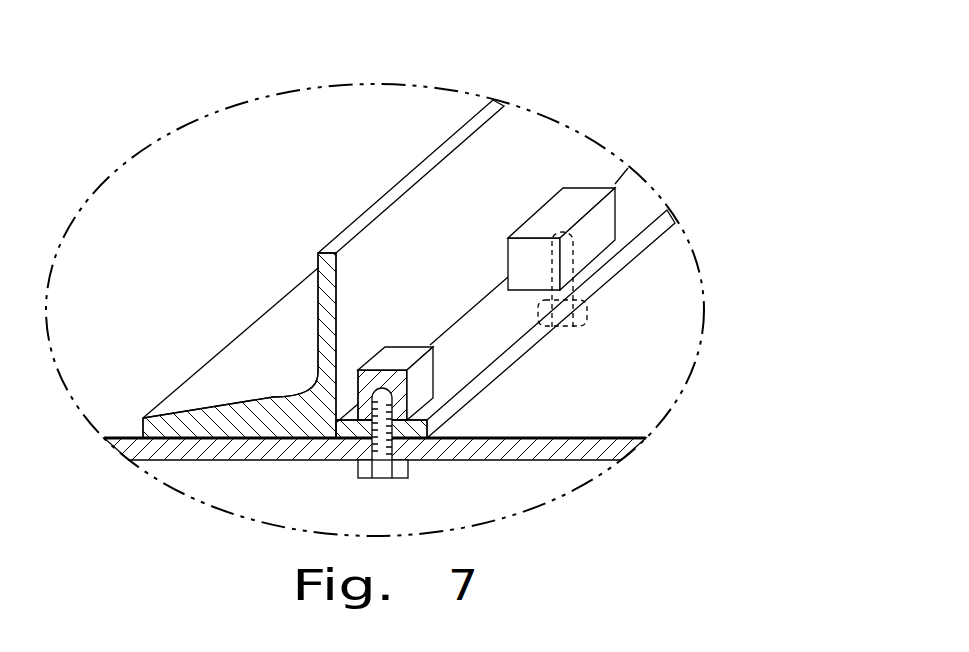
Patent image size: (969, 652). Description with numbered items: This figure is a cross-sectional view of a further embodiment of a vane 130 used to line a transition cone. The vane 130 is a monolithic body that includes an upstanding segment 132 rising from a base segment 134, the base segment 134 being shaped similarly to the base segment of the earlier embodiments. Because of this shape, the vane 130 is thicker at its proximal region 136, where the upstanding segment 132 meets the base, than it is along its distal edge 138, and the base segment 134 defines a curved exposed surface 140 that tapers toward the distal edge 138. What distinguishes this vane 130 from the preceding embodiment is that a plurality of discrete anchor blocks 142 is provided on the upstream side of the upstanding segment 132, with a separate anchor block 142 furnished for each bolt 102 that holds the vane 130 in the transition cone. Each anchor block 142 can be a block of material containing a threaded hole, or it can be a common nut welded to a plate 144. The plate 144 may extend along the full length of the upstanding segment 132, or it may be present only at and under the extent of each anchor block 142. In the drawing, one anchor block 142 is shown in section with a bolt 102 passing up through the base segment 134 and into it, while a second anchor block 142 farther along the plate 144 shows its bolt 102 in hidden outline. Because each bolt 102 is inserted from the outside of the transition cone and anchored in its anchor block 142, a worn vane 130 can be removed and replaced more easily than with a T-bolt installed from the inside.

The vane 130 is at (573, 97).
The upstanding segment 132 is at (517, 162).
The base segment 134 is at (197, 430).
The proximal region 136 is at (305, 400).
The distal edge 138 is at (143, 418).
The curved exposed surface 140 is at (250, 362).
The anchor block 142 is at (422, 388).
The plate 144 is at (618, 267).
The bolt 102 is at (395, 480).